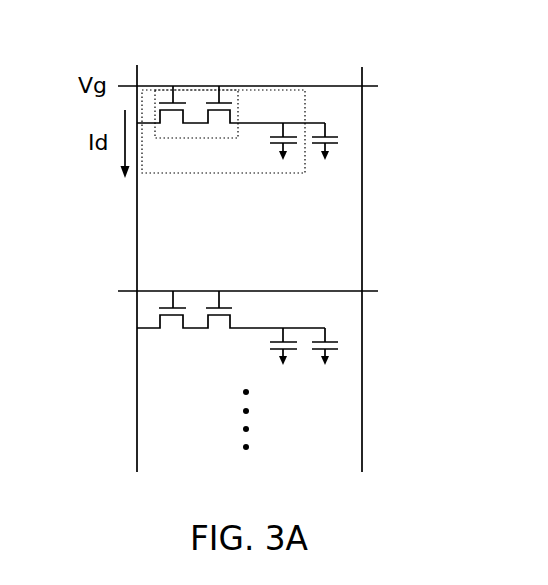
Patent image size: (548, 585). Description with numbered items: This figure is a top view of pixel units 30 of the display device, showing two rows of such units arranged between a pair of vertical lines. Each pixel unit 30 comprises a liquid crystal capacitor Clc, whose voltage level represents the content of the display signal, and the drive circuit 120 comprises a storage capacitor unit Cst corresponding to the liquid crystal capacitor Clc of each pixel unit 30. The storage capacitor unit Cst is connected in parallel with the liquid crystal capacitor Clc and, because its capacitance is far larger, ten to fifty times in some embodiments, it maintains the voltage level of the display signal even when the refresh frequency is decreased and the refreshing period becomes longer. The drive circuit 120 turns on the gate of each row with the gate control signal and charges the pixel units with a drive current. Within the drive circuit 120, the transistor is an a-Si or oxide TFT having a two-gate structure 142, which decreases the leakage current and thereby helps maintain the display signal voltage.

The pixel unit 30 is at (244, 247).
The drive circuit 120 is at (290, 125).
The two-gate structure 142 is at (178, 138).
The liquid crystal capacitor Clc is at (270, 143).
The storage capacitor unit Cst is at (335, 133).